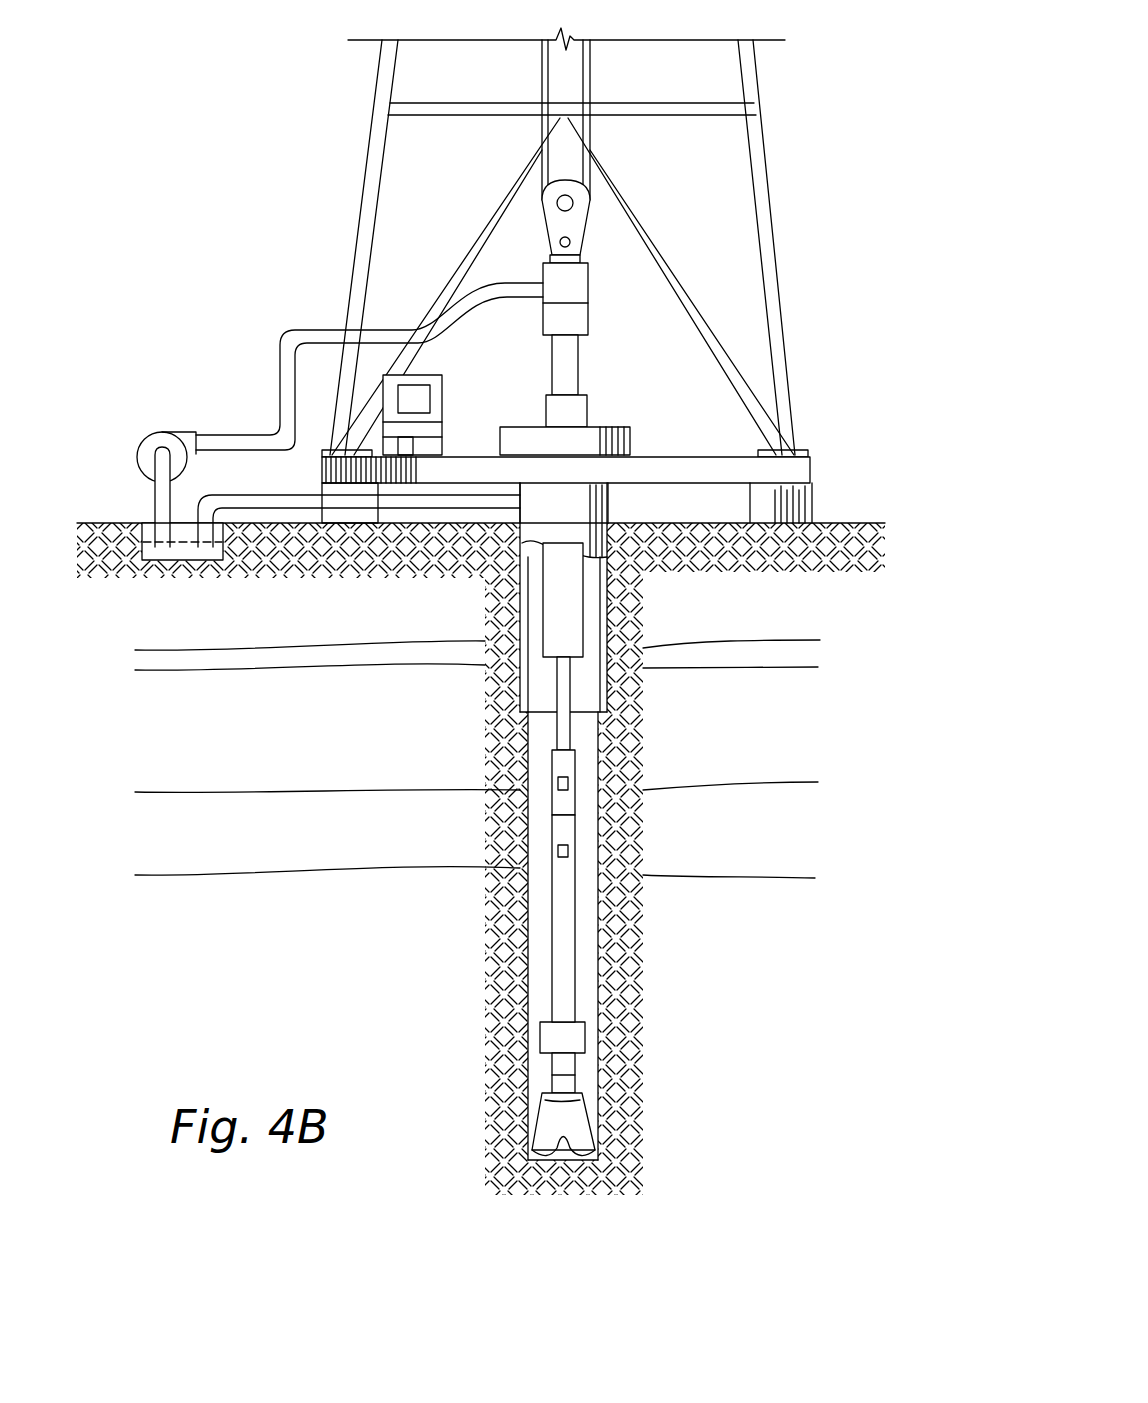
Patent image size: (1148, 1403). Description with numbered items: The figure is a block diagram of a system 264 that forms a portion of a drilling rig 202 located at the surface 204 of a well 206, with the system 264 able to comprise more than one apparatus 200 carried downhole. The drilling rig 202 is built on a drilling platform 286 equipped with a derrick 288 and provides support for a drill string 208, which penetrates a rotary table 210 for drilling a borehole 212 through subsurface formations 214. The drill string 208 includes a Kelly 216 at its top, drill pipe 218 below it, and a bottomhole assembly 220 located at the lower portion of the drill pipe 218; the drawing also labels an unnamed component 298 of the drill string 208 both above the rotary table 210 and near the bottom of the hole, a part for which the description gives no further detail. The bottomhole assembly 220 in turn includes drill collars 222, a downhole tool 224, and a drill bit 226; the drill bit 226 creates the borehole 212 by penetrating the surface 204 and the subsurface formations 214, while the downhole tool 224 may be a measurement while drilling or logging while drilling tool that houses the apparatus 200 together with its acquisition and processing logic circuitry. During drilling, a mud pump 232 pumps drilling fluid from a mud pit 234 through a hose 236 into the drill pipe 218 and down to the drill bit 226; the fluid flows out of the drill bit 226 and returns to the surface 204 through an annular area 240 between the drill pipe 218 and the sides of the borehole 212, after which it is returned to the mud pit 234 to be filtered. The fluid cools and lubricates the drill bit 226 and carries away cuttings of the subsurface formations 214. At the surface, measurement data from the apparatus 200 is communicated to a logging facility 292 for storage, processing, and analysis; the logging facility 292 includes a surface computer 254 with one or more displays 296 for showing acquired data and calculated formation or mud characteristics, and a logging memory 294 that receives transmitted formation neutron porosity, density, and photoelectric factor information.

The apparatus 200 is at (568, 783).
The drilling rig 202 is at (785, 246).
The surface 204 is at (820, 523).
The well 206 is at (625, 513).
The drill string 208 is at (592, 908).
The rotary table 210 is at (532, 428).
The borehole 212 is at (598, 1020).
The subsurface formations 214 is at (135, 603).
The Kelly 216 is at (580, 348).
The drill pipe 218 is at (585, 620).
The bottomhole assembly 220 is at (478, 708).
The drill collars 222 is at (570, 732).
The downhole tool 224 is at (570, 830).
The drill bit 226 is at (573, 1120).
The mud pump 232 is at (162, 432).
The mud pit 234 is at (183, 562).
The hose 236 is at (280, 390).
The annular area 240 is at (582, 752).
The surface computer 254 is at (445, 393).
The system 264 is at (255, 161).
The drilling platform 286 is at (812, 463).
The derrick 288 is at (772, 172).
The logging facility 292 is at (433, 371).
The logging memory 294 is at (430, 445).
The display 296 is at (430, 402).
The sub 298 is at (588, 404).